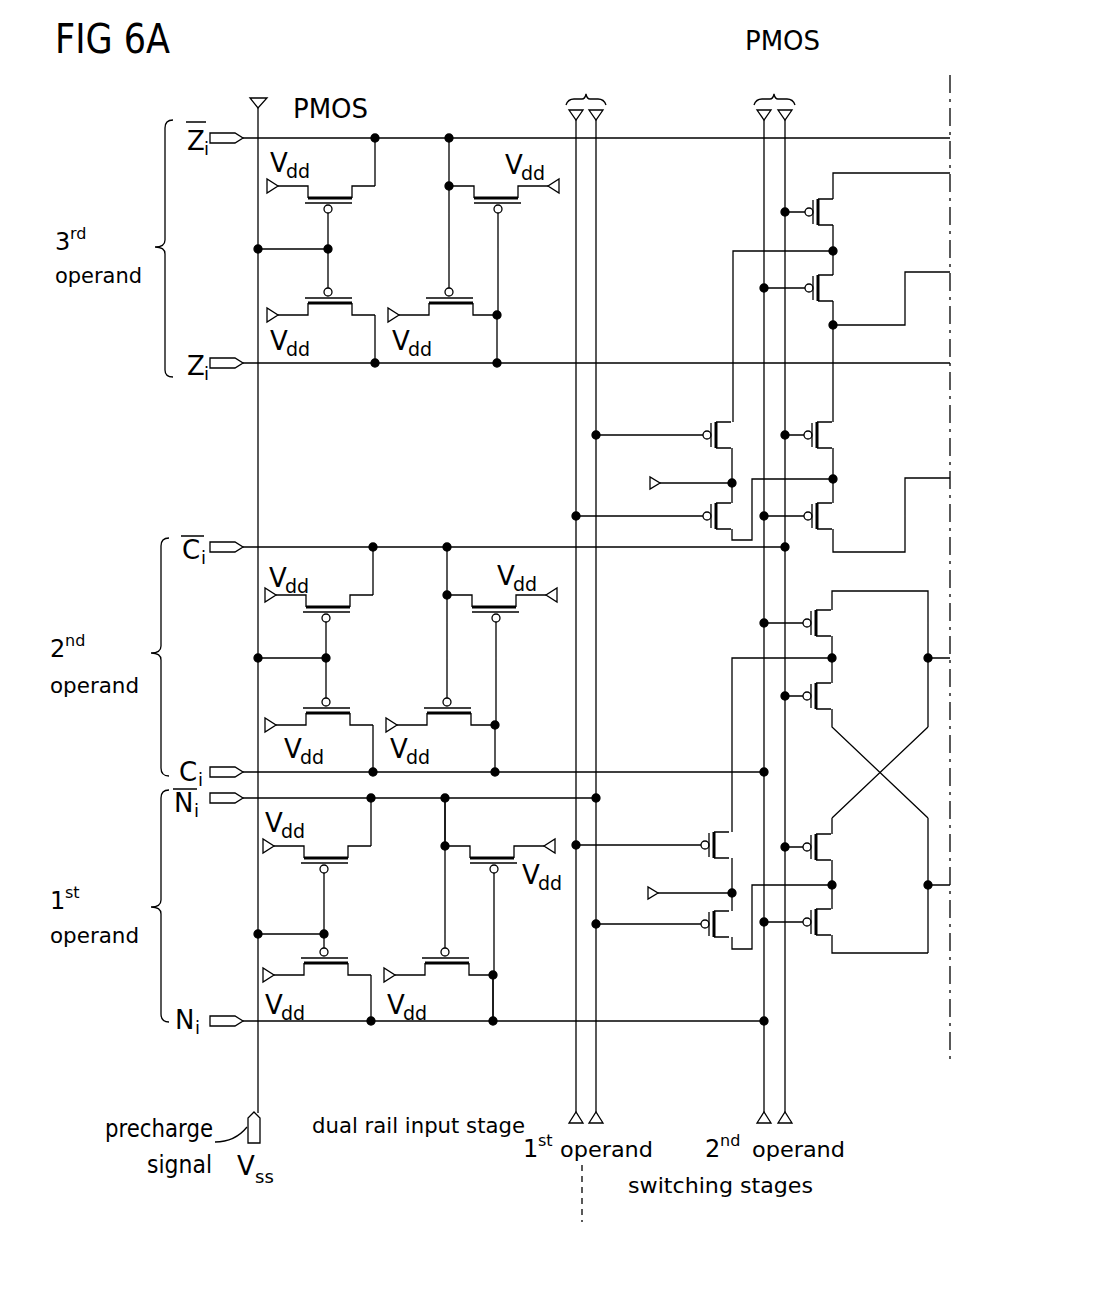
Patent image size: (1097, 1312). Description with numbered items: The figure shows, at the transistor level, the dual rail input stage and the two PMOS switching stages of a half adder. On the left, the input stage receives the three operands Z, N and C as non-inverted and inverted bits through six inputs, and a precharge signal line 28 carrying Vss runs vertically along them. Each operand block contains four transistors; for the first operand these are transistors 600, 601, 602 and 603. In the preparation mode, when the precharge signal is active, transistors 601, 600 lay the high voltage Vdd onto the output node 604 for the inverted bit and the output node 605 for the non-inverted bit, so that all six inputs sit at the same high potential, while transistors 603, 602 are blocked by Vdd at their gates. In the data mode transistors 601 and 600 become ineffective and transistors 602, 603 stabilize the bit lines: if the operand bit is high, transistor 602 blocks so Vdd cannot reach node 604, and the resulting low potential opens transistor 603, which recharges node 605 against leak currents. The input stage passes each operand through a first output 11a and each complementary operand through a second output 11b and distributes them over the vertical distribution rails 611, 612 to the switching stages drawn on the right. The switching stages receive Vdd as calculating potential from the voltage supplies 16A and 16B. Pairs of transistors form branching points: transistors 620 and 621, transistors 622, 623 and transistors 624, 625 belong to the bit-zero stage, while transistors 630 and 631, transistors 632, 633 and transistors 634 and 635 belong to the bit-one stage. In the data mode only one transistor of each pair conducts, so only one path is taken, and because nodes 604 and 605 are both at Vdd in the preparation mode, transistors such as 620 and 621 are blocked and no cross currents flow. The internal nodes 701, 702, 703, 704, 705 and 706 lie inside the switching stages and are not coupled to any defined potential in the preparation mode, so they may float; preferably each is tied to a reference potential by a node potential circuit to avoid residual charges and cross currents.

The precharge signal line 28 is at (255, 1044).
The transistor 600 is at (334, 949).
The transistor 601 is at (314, 873).
The transistor 602 is at (503, 873).
The transistor 603 is at (438, 949).
The output node 604 is at (416, 805).
The output node 605 is at (418, 1027).
The first output 11a is at (547, 1027).
The second output 11b is at (527, 803).
The distribution rail 611 is at (590, 594).
The distribution rail 612 is at (777, 594).
The transistor 620 is at (704, 937).
The transistor 621 is at (704, 835).
The transistor 622 is at (826, 625).
The transistor 623 is at (826, 723).
The transistor 624 is at (826, 850).
The transistor 625 is at (826, 950).
The transistor 630 is at (706, 424).
The transistor 631 is at (702, 526).
The transistor 632 is at (826, 218).
The transistor 633 is at (826, 292).
The transistor 634 is at (828, 446).
The transistor 635 is at (828, 522).
The internal node 701 is at (926, 661).
The internal node 702 is at (926, 887).
The internal node 703 is at (836, 884).
The internal node 704 is at (836, 478).
The internal node 705 is at (836, 250).
The internal node 706 is at (836, 657).
The voltage supply 16A is at (690, 893).
The voltage supply 16B is at (690, 483).